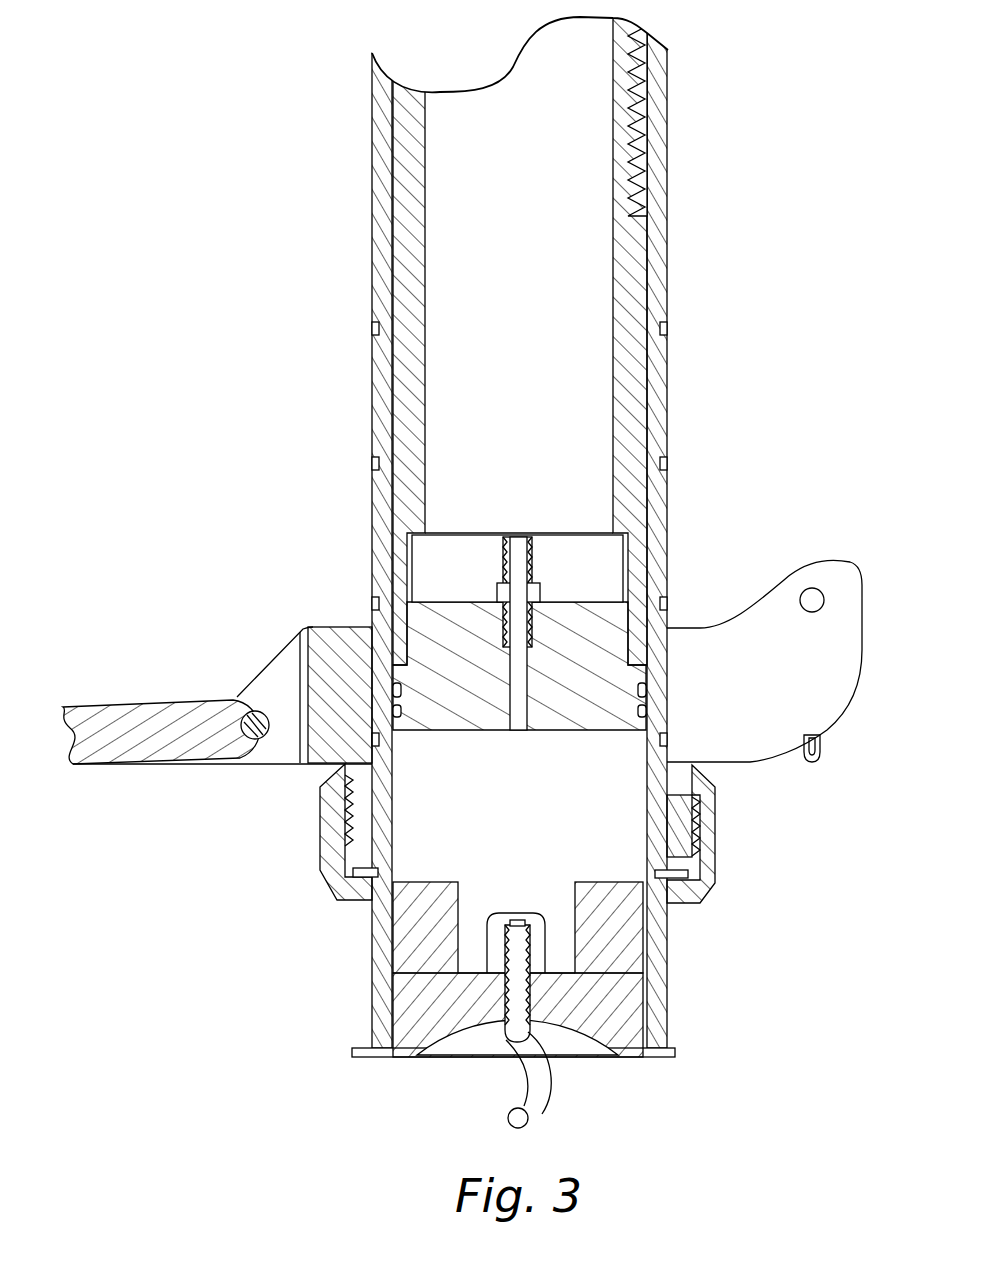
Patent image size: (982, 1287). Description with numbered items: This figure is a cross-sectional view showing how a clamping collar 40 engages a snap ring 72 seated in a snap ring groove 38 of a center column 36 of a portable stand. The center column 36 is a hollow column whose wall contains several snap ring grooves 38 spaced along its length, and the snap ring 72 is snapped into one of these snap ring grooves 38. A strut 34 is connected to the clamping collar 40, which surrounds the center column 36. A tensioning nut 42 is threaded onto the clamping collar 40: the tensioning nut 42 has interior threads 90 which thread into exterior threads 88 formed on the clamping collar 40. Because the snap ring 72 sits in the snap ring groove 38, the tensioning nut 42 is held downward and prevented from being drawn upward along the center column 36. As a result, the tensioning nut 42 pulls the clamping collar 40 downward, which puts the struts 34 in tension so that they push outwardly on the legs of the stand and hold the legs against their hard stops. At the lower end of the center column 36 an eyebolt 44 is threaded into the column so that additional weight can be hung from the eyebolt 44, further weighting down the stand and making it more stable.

The strut 34 is at (157, 714).
The center column 36 is at (657, 378).
The snap ring groove 38 is at (663, 465).
The clamping collar 40 is at (762, 740).
The tensioning nut 42 is at (320, 800).
The eyebolt 44 is at (548, 1090).
The snap ring 72 is at (365, 875).
The exterior threads 88 is at (700, 850).
The interior threads 90 is at (345, 810).